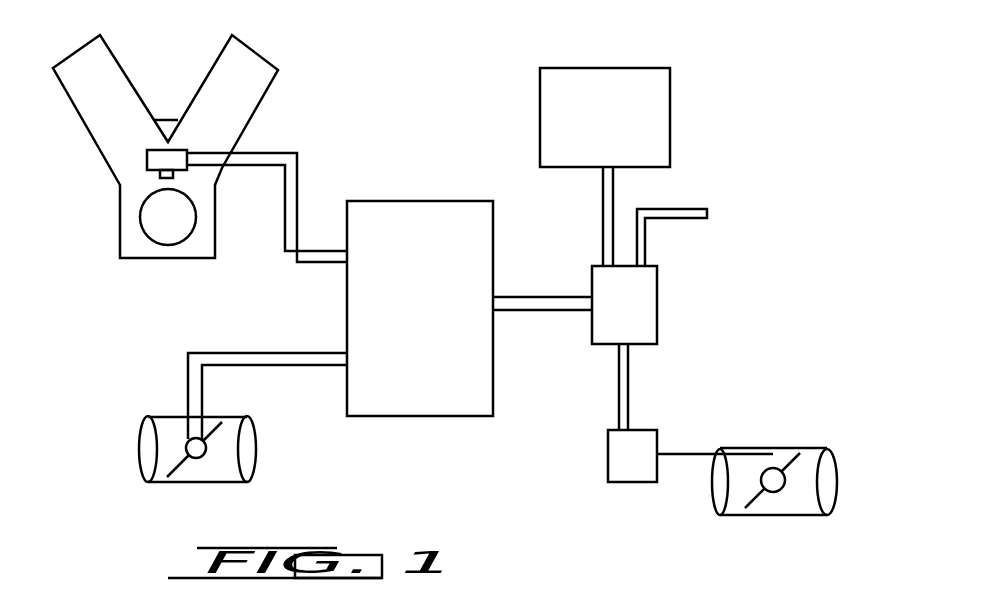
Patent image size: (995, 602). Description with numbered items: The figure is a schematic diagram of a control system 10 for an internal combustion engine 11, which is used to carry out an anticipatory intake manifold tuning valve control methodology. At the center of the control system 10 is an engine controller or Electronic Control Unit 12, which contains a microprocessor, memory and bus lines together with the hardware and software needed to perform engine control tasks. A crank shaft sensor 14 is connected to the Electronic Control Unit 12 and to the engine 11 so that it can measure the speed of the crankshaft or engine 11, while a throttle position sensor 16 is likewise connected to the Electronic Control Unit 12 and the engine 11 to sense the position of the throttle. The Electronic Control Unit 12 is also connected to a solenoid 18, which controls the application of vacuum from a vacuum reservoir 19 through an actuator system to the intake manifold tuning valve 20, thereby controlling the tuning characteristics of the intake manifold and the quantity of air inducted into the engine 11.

The control system 10 is at (493, 93).
The internal combustion engine 11 is at (128, 208).
The Electronic Control Unit 12 is at (425, 328).
The crank shaft sensor 14 is at (175, 157).
The throttle position sensor 16 is at (205, 452).
The solenoid 18 is at (643, 326).
The vacuum reservoir 19 is at (660, 75).
The intake manifold tuning valve 20 is at (773, 453).